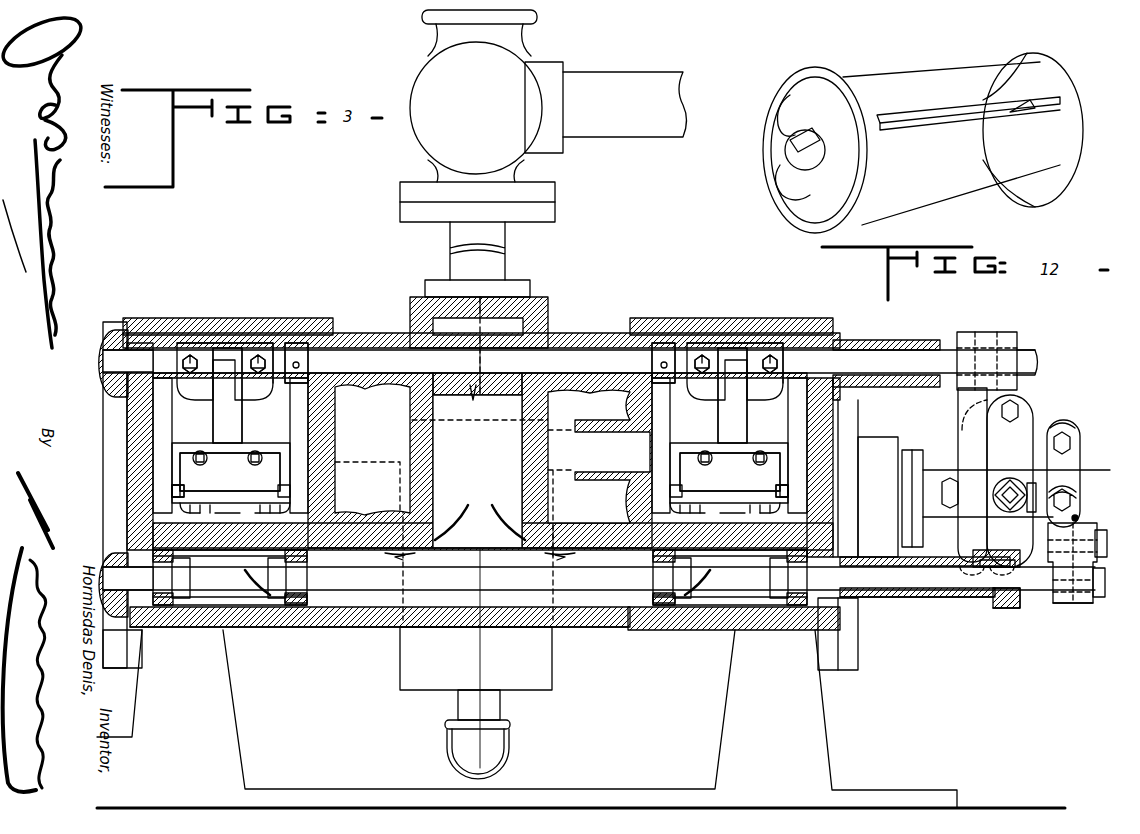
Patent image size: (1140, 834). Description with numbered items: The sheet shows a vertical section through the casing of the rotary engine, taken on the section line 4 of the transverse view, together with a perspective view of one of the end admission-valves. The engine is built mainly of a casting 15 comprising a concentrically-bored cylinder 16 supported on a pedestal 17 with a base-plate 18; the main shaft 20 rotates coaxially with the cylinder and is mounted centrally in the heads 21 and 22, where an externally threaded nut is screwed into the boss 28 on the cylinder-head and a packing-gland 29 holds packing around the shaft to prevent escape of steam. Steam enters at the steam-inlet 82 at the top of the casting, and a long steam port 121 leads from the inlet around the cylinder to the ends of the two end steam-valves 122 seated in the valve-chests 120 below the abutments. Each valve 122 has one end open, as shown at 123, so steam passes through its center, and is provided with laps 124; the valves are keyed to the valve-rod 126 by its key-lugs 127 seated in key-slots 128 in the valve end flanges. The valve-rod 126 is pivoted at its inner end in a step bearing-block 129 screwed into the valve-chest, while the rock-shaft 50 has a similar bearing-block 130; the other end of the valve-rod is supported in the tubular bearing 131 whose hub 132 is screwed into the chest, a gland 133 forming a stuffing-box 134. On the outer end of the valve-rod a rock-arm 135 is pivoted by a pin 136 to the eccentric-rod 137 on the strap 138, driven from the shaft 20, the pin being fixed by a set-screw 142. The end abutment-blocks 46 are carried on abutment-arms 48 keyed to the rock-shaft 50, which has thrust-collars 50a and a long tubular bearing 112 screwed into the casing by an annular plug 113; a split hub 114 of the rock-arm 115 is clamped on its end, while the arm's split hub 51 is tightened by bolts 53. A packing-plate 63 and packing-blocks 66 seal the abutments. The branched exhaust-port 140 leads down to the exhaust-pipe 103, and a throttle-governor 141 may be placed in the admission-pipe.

In FIG. 3, the throttle-governor 141 is at (543, 116).
In FIG. 3, the pipe connection 4 is at (477, 258).
In FIG. 3, the steam-inlet 82 is at (545, 300).
In FIG. 3, the casting 15 is at (360, 320).
In FIG. 3, the rock-shaft 50 is at (597, 360).
In FIG. 3, the cylinder 16 is at (363, 630).
In FIG. 3, the steam port 121 is at (479, 458).
In FIG. 3, the exhaust-port 140 is at (370, 440).
In FIG. 3, the valve-chest 120 is at (715, 630).
In FIG. 3, the steam-valve 122 is at (800, 630).
In FIG. 12, the steam-valve 122 is at (915, 185).
In FIG. 3, the key-lug 127 is at (172, 572).
In FIG. 3, the open end 123 is at (300, 628).
In FIG. 12, the open end 123 is at (805, 112).
In FIG. 3, the valve-rod 126 is at (565, 578).
In FIG. 3, the exhaust-pipe 103 is at (490, 753).
In FIG. 3, the cylinder-head 22 is at (107, 411).
In FIG. 3, the bearing-block 130 is at (105, 338).
In FIG. 3, the step bearing-block 129 is at (90, 580).
In FIG. 3, the set-screw 142 is at (80, 453).
In FIG. 3, the annular plug 113 is at (845, 338).
In FIG. 3, the tubular bearing 112 is at (880, 342).
In FIG. 3, the abutment-arm 48 is at (236, 423).
In FIG. 3, the abutment-block 46 is at (480, 477).
In FIG. 3, the packing-plate 63 is at (235, 525).
In FIG. 3, the packing-block 66 is at (160, 490).
In FIG. 3, the bolt 53 is at (480, 354).
In FIG. 3, the split hub 51 is at (235, 330).
In FIG. 3, the thrust-collar 50a is at (790, 330).
In FIG. 3, the split hub 114 is at (1010, 335).
In FIG. 3, the boss 28 is at (878, 440).
In FIG. 3, the packing-gland 29 is at (915, 500).
In FIG. 3, the main shaft 20 is at (933, 475).
In FIG. 3, the rock-arm 115 is at (960, 395).
In FIG. 3, the eccentric-strap 138 is at (1075, 458).
In FIG. 3, the eccentric-rod 137 is at (1078, 518).
In FIG. 3, the pin 136 is at (1105, 570).
In FIG. 3, the rock-arm 135 is at (1080, 603).
In FIG. 3, the stuffing-box 134 is at (1000, 605).
In FIG. 3, the gland 133 is at (1005, 608).
In FIG. 3, the tubular bearing 131 is at (922, 605).
In FIG. 3, the hub 132 is at (855, 605).
In FIG. 3, the cylinder-head 21 is at (848, 660).
In FIG. 3, the pedestal 17 is at (215, 723).
In FIG. 3, the base-plate 18 is at (893, 798).
In FIG. 12, the lap 124 is at (920, 80).
In FIG. 12, the key-slot 128 is at (1025, 108).